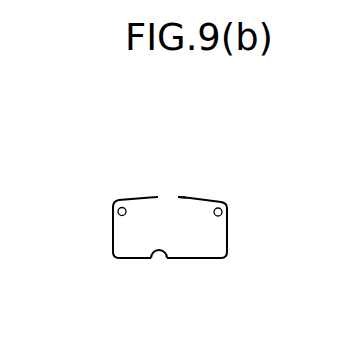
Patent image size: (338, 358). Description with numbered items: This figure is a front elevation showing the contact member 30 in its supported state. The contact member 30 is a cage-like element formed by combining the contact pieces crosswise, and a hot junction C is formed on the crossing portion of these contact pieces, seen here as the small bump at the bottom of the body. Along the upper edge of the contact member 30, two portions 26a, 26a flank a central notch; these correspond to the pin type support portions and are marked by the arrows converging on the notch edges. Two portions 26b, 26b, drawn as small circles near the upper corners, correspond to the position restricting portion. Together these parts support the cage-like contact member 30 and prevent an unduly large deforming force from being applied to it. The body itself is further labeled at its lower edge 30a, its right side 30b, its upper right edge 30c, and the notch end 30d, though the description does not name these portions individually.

The contact member 30 is at (110, 242).
The bottom portion 30a is at (211, 260).
The side portion 30b is at (228, 245).
The upper edge portion 30c is at (212, 203).
The notch end 30d is at (178, 196).
The pin type support portion 26a is at (157, 198).
The position restricting portion 26b is at (118, 208).
The hot junction C is at (153, 258).